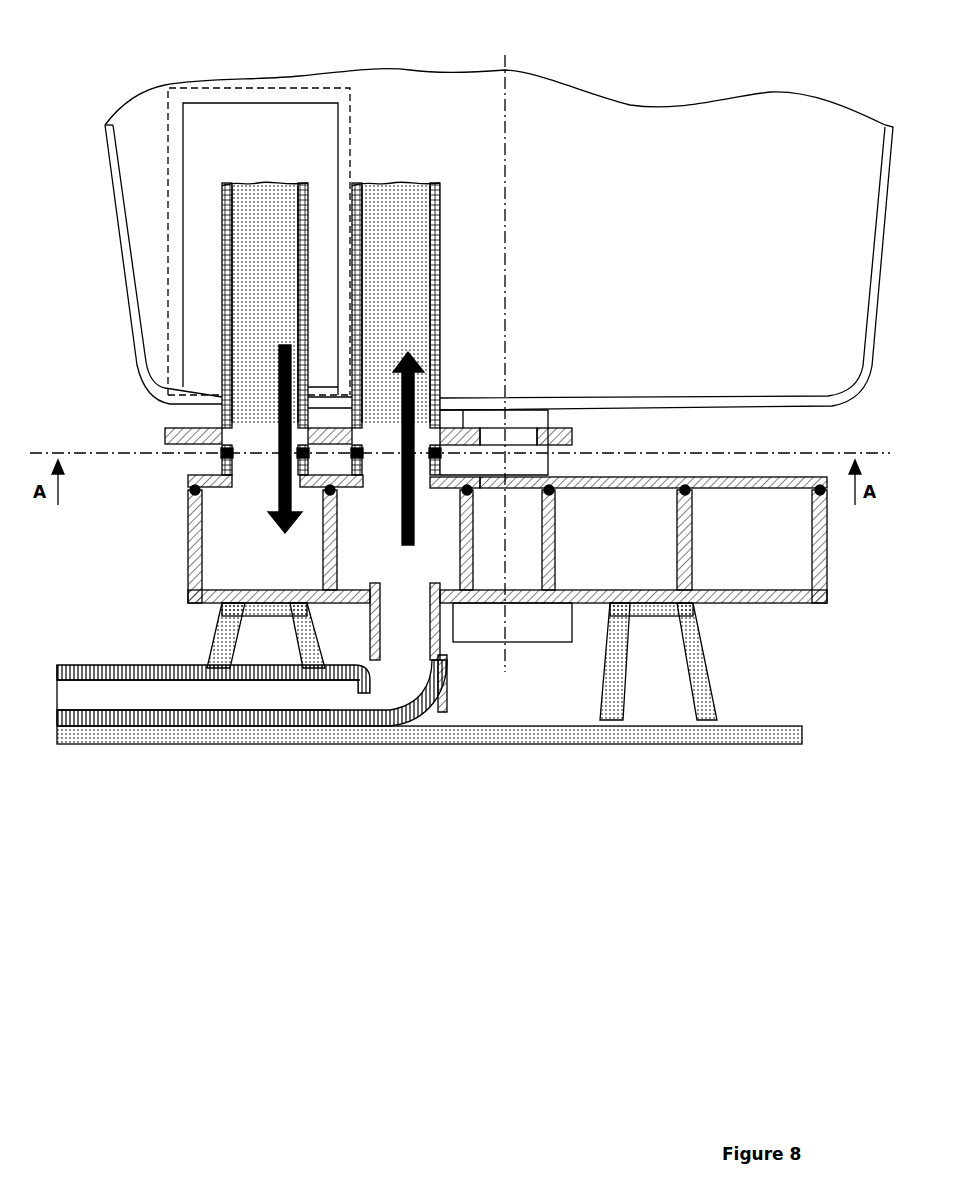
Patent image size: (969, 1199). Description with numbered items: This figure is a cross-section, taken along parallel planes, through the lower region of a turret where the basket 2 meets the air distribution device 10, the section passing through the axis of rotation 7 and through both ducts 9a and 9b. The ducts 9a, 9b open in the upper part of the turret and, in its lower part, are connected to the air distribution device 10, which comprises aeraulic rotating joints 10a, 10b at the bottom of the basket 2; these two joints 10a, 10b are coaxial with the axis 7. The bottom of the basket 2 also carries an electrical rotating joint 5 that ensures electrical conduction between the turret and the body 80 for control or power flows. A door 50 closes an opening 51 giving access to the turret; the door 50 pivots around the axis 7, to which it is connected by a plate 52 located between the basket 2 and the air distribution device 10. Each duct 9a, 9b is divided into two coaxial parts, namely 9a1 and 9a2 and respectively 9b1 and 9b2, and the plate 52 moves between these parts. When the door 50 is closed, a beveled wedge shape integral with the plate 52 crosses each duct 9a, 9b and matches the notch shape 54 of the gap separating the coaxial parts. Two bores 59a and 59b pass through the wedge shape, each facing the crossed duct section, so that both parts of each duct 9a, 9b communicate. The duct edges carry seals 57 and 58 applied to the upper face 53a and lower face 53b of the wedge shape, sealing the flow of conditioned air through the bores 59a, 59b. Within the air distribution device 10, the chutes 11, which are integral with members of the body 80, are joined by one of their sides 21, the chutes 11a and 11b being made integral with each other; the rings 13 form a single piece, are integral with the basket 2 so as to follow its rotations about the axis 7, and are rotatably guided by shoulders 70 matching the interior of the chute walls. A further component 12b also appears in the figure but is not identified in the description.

The basket 2 is at (597, 160).
The axis of rotation 7 is at (505, 57).
The opening 51 is at (278, 130).
The duct 9a is at (407, 233).
The coaxial part 9a1 is at (428, 326).
The coaxial part 9a2 is at (420, 480).
The duct 9b is at (268, 233).
The coaxial part 9b1 is at (243, 373).
The coaxial part 9b2 is at (188, 483).
The door 50 is at (182, 420).
The plate 52 is at (572, 443).
The upper face 53a is at (258, 412).
The lower face 53b is at (385, 475).
The notch shape 54 is at (337, 423).
The seal 57 is at (443, 420).
The seal 58 is at (318, 483).
The bore 59a is at (472, 437).
The bore 59b is at (243, 438).
The air distribution device 10 is at (148, 562).
The aeraulic rotating joint 10a is at (734, 578).
The aeraulic rotating joint 10b is at (611, 566).
The side 21 is at (678, 520).
The shoulder 70 is at (808, 495).
The electrical rotating joint 5 is at (538, 618).
The chute 11 is at (163, 660).
The chute 11a is at (250, 660).
The chute 11b is at (280, 660).
The connecting pipe 12b is at (440, 660).
The ring 13 is at (752, 492).
The body 80 is at (665, 618).